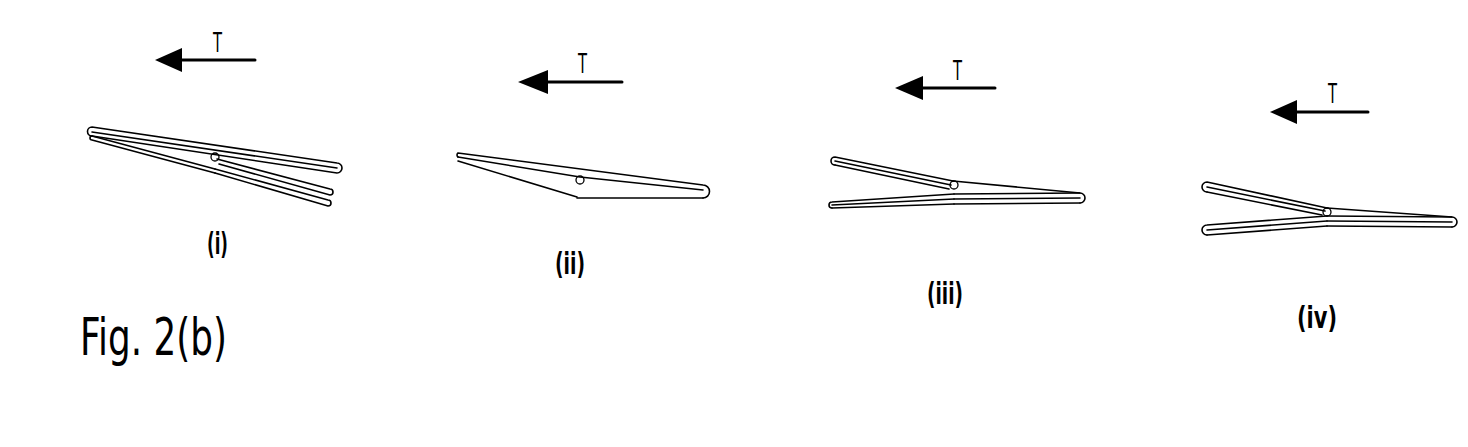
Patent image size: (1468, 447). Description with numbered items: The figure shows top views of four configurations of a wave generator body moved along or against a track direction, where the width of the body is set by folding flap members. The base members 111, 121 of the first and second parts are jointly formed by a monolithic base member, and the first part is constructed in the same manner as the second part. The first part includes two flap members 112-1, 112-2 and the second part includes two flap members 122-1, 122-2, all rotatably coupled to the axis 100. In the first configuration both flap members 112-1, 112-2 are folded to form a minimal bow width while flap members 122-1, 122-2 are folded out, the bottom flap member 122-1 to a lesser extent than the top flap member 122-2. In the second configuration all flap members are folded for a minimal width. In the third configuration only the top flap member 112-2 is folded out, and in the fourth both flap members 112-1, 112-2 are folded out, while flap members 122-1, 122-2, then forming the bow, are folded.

The axis 100 is at (213, 153).
The base member 121 is at (270, 154).
The base member 111 is at (772, 154).
The flap member 112-1 is at (852, 170).
The flap member 112-2 is at (175, 158).
The flap member 122-1 is at (328, 189).
The flap member 122-2 is at (272, 186).